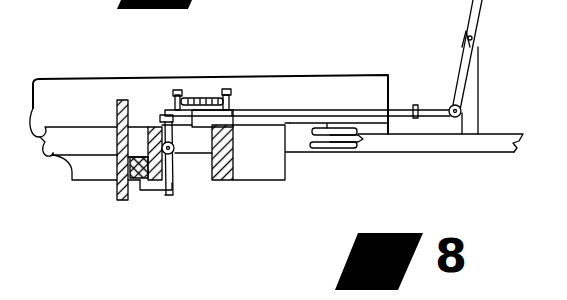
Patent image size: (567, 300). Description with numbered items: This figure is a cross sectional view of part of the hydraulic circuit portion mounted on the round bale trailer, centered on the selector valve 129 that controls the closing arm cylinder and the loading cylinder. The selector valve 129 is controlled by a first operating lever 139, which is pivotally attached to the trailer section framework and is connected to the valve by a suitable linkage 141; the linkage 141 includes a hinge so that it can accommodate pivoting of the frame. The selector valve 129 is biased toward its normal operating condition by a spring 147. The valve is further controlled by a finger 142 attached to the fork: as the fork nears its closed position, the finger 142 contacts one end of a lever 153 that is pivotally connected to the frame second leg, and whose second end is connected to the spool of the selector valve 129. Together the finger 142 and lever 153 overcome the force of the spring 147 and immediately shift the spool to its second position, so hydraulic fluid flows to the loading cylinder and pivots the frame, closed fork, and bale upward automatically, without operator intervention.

The selector valve 129 is at (210, 116).
The first operating lever 139 is at (485, 5).
The linkage 141 is at (443, 101).
The finger 142 is at (150, 187).
The spring 147 is at (196, 92).
The lever 153 is at (176, 184).